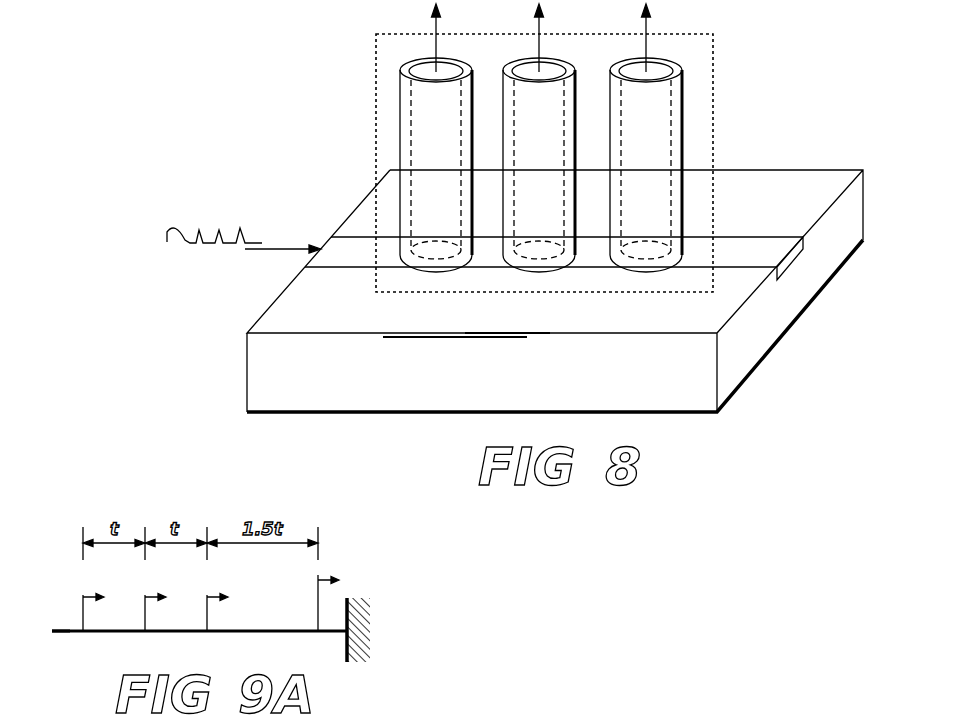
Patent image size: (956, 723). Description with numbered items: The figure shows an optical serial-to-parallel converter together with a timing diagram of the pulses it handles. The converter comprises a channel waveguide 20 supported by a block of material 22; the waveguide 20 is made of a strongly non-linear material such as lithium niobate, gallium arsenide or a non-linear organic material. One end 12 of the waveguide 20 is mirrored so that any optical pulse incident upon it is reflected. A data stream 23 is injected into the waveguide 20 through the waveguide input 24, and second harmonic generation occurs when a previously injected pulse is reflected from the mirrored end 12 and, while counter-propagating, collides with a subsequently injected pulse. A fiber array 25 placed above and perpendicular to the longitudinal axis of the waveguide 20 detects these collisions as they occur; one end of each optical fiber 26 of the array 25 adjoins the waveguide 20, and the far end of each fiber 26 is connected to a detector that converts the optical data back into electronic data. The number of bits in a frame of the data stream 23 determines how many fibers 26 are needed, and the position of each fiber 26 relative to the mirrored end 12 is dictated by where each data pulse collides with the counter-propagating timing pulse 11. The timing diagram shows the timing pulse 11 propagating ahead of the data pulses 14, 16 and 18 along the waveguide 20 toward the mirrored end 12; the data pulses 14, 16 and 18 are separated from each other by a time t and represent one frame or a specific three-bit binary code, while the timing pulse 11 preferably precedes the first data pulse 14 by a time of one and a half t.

In FIG. 9A, the timing pulse 11 is at (343, 563).
In FIG. 8, the mirrored end of the waveguide 12 is at (796, 280).
In FIG. 9A, the mirrored end of the waveguide 12 is at (372, 633).
In FIG. 9A, the first data pulse 14 is at (207, 615).
In FIG. 9A, the second data pulse 16 is at (145, 612).
In FIG. 9A, the third data pulse 18 is at (83, 612).
In FIG. 8, the channel waveguide 20 is at (740, 268).
In FIG. 9A, the channel waveguide 20 is at (192, 632).
In FIG. 8, the block of material 22 is at (466, 403).
In FIG. 8, the data stream 23 is at (207, 250).
In FIG. 8, the waveguide input 24 is at (322, 243).
In FIG. 9A, the waveguide input 24 is at (52, 633).
In FIG. 8, the fiber array 25 is at (689, 34).
In FIG. 8, the optical fiber 26 is at (405, 68).